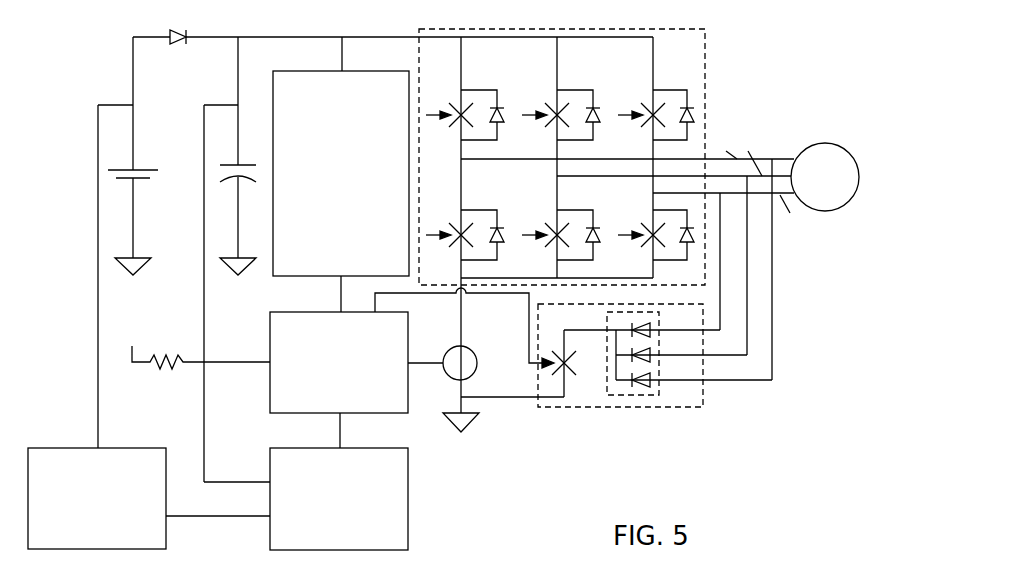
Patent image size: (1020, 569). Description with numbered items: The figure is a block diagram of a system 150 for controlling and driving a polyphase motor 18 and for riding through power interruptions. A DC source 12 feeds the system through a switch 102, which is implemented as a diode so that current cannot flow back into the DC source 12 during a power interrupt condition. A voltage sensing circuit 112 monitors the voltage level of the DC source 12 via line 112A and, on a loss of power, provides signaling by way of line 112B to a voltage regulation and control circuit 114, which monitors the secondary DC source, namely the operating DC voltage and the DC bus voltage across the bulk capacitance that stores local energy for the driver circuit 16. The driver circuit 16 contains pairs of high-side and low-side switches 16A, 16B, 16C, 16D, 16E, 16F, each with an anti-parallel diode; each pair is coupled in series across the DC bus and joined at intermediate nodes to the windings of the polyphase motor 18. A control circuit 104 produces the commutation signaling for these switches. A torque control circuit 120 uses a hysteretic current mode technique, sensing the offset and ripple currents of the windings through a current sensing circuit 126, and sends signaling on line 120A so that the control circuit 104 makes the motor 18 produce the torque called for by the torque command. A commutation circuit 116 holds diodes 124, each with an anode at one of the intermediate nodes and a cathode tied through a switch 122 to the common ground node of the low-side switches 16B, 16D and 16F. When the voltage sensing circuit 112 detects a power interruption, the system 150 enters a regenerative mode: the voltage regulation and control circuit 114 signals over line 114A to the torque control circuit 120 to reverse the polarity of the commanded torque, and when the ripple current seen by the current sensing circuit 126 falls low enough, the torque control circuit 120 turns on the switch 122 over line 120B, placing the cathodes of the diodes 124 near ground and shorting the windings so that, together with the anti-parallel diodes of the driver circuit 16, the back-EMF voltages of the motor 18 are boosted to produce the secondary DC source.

The system 150 is at (791, 88).
The switch 102 is at (178, 52).
The DC source 12 is at (134, 156).
The line 112A is at (73, 276).
The control circuit 104 is at (341, 156).
The line 120A is at (312, 294).
The torque control circuit 120 is at (339, 362).
The line 120B is at (464, 328).
The current sensing circuit 126 is at (472, 351).
The line 114A is at (315, 430).
The voltage regulation and control circuit 114 is at (339, 499).
The voltage sensing circuit 112 is at (97, 498).
The line 112B is at (218, 529).
The driver circuit 16 is at (576, 157).
The high-side switch 16A is at (462, 110).
The low-side switch 16B is at (462, 230).
The high-side switch 16C is at (557, 110).
The low-side switch 16D is at (557, 230).
The high-side switch 16E is at (653, 110).
The low-side switch 16F is at (653, 230).
The polyphase motor 18 is at (819, 163).
The commutation circuit 116 is at (655, 355).
The switch 122 is at (574, 366).
The diodes 124 is at (649, 357).